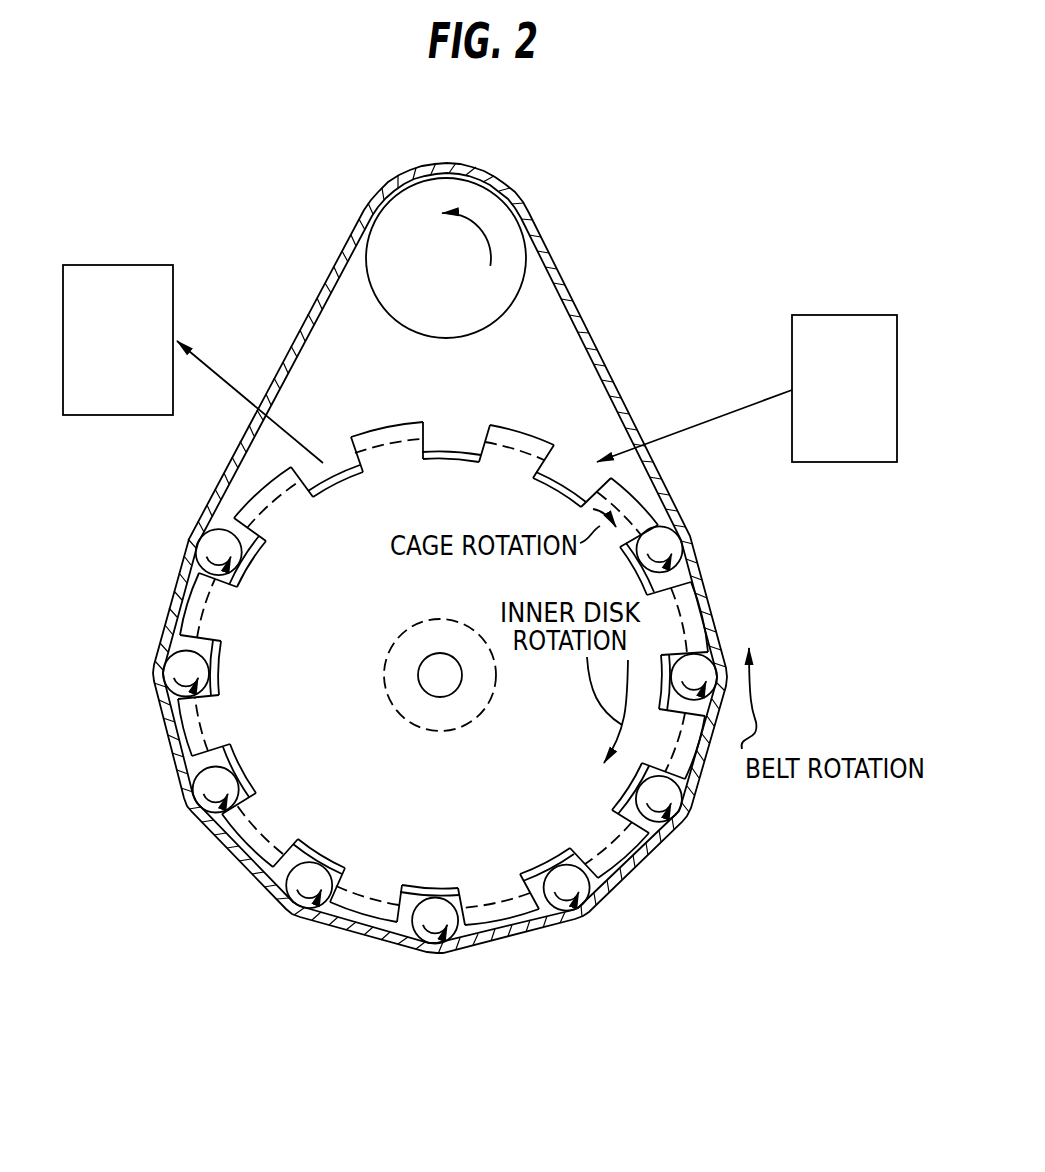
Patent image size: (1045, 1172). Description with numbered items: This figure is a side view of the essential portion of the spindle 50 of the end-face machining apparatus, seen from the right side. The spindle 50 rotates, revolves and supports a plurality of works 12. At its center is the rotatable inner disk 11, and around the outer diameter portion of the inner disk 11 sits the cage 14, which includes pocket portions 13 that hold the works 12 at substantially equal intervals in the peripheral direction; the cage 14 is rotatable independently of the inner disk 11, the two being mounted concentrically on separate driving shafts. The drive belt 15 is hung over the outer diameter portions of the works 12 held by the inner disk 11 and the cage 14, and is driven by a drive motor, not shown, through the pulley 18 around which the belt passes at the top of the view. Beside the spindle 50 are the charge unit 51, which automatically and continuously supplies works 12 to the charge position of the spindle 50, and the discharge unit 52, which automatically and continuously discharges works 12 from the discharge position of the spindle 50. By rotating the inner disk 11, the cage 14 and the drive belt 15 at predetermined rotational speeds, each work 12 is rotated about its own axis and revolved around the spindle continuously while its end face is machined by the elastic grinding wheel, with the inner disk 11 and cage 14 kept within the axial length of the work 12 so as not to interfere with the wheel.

The inner disk 11 is at (444, 450).
The work 12 is at (491, 642).
The pocket portion 13 is at (470, 452).
The cage 14 is at (482, 490).
The drive belt 15 is at (668, 482).
The pulley 18 is at (503, 247).
The spindle 50 is at (479, 558).
The charge unit 51 is at (851, 315).
The discharge unit 52 is at (131, 265).